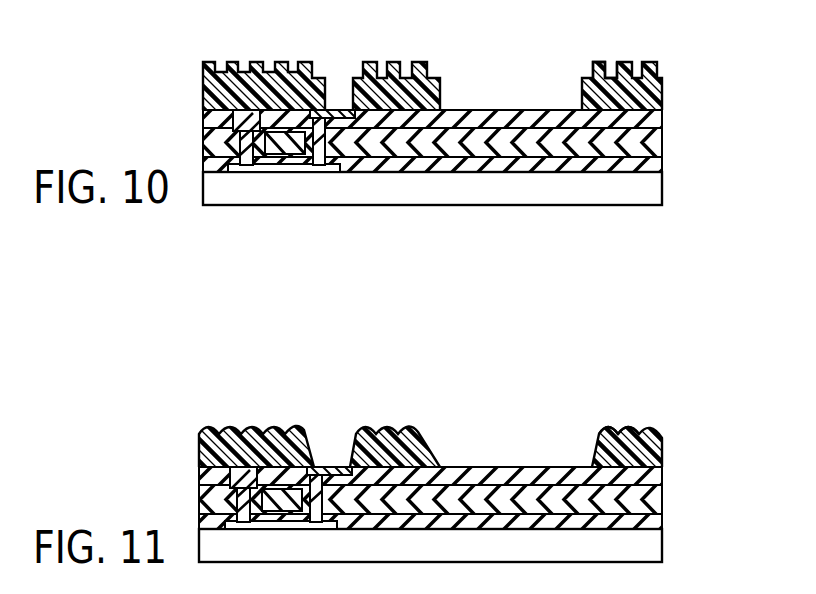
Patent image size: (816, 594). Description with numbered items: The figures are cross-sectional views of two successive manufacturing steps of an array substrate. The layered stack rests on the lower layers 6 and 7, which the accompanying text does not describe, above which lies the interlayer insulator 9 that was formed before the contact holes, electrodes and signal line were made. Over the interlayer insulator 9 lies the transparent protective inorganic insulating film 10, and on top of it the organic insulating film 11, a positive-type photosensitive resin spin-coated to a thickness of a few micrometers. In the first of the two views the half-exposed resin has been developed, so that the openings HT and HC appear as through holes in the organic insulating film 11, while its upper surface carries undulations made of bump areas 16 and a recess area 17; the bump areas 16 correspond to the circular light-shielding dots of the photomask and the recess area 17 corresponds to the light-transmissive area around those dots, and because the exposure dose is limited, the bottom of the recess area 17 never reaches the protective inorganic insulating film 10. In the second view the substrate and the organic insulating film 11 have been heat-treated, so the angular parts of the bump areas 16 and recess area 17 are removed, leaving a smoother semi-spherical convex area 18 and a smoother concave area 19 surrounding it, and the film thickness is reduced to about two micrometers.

In FIG. 10, the substrate 6 is at (653, 192).
In FIG. 11, the substrate 6 is at (654, 548).
In FIG. 10, the insulating film 7 is at (653, 165).
In FIG. 11, the insulating film 7 is at (654, 522).
In FIG. 10, the interlayer insulator 9 is at (653, 143).
In FIG. 11, the interlayer insulator 9 is at (654, 503).
In FIG. 10, the protective inorganic insulating film 10 is at (656, 124).
In FIG. 11, the protective inorganic insulating film 10 is at (654, 477).
In FIG. 10, the organic insulating film 11 is at (663, 97).
In FIG. 11, the organic insulating film 11 is at (663, 447).
In FIG. 10, the bump areas 16 is at (603, 62).
In FIG. 10, the recess area 17 is at (633, 66).
In FIG. 11, the semi-spherical convex area 18 is at (607, 429).
In FIG. 11, the concave area 19 is at (642, 432).
In FIG. 10, the opening HC is at (338, 96).
In FIG. 11, the opening HC is at (328, 455).
In FIG. 10, the opening HT is at (510, 97).
In FIG. 11, the opening HT is at (508, 447).